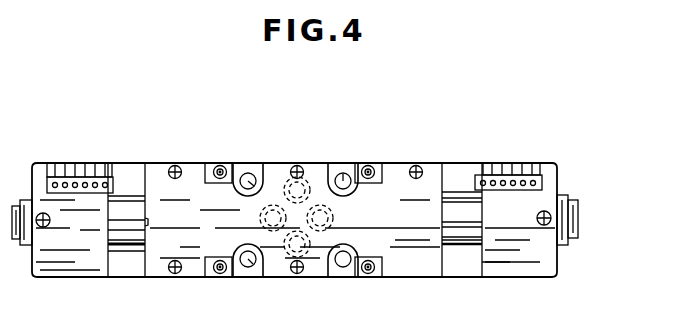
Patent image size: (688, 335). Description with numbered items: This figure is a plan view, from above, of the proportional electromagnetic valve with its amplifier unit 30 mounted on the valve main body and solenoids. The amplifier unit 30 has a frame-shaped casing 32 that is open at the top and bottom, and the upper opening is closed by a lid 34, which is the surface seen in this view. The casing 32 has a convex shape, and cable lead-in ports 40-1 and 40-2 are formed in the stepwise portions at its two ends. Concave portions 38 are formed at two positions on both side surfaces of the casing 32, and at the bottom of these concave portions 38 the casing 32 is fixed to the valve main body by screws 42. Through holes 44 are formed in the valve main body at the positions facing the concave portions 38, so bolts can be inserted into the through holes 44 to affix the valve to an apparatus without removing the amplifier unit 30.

The amplifier unit 30 is at (447, 161).
The casing 32 is at (507, 258).
The lid 34 is at (428, 177).
The concave portions 38 is at (247, 166).
The cable lead-in port 40-1 is at (118, 233).
The cable lead-in port 40-2 is at (470, 217).
The screws 42 is at (215, 163).
The through holes 44 is at (262, 184).